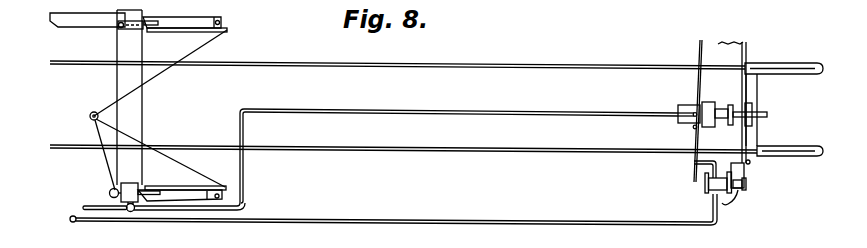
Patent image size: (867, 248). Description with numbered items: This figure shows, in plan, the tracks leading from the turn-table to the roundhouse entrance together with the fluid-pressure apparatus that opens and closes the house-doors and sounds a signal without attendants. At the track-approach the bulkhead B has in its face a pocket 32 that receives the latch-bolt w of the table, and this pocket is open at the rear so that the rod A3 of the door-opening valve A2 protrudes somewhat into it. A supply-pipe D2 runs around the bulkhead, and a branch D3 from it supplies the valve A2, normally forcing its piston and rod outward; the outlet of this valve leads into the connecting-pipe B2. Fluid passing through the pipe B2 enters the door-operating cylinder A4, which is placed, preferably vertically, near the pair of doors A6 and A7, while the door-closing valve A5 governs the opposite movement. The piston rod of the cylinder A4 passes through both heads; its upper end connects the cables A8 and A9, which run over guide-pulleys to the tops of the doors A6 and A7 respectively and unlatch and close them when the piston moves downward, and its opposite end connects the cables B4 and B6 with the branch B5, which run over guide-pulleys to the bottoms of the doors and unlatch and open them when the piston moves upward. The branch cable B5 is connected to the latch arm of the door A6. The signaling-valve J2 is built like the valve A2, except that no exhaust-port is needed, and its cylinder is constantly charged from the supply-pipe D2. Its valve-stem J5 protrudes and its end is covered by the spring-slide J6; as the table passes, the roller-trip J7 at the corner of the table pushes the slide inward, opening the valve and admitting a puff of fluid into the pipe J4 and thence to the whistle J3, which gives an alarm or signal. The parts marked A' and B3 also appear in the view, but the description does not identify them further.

The cable B6 is at (212, 16).
The door A7 is at (222, 28).
The cable B4 is at (117, 78).
The cable A9 is at (158, 70).
The connecting-pipe B2 is at (438, 109).
The cable A8 is at (148, 143).
The door A6 is at (182, 189).
The door-operating cylinder A4 is at (109, 193).
The bar B3 is at (81, 208).
The whistle J3 is at (70, 221).
The door-closing valve A5 is at (134, 211).
The branch cable B5 is at (200, 201).
The pipe J4 is at (456, 224).
The supply-pipe D2 is at (698, 58).
The roller-trip J7 is at (747, 62).
The door-opening valve A2 is at (681, 105).
The rod A3 is at (725, 108).
The frame A' is at (436, 108).
The branch D3 is at (692, 127).
The pocket 32 is at (729, 116).
The latch-bolt w is at (767, 117).
The signaling-valve J2 is at (706, 186).
The bulkhead B is at (745, 172).
The spring-slide J6 is at (746, 190).
The valve-stem J5 is at (731, 202).